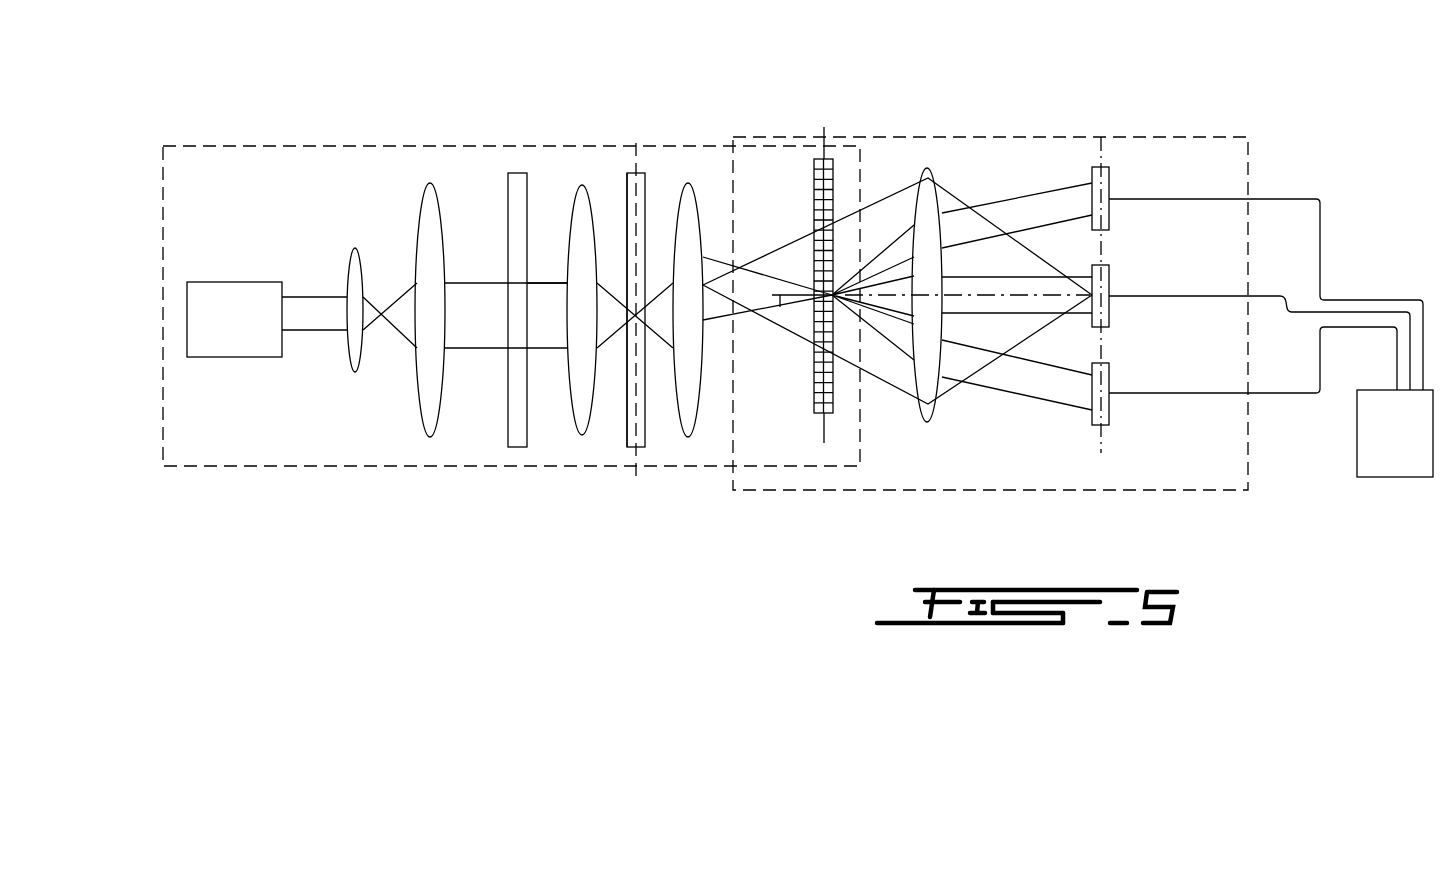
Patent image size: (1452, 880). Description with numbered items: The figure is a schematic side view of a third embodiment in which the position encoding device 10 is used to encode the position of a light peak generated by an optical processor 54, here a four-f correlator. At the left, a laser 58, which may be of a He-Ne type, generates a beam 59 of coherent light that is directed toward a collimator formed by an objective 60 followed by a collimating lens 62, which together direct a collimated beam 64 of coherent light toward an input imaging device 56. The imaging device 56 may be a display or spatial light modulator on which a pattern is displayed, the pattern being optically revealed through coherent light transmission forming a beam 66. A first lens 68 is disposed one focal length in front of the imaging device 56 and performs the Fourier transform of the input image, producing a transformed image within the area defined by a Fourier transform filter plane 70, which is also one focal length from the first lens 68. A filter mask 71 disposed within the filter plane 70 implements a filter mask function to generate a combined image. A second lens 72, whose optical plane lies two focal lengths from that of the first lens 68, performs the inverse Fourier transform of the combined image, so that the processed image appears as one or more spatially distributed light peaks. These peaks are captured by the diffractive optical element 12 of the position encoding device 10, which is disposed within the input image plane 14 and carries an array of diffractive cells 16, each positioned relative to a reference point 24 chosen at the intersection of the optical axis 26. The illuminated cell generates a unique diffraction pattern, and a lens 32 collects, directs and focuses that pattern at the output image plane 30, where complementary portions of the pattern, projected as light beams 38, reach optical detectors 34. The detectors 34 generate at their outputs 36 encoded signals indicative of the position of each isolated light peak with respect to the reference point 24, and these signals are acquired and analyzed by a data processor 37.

The position encoding device 10 is at (1057, 137).
The diffractive optical element 12 is at (815, 208).
The input image plane 14 is at (823, 140).
The diffractive cells 16 is at (833, 192).
The reference point 24 is at (818, 322).
The optical axis 26 is at (780, 310).
The output image plane 30 is at (1102, 148).
The lens 32 is at (935, 180).
The optical detectors 34 is at (1110, 220).
The outputs 36 is at (1110, 295).
The data processor 37 is at (1376, 452).
The light beams 38 is at (1042, 207).
The optical processor 54 is at (353, 145).
The imaging device 56 is at (517, 173).
The laser 58 is at (215, 282).
The beam 59 is at (314, 296).
The objective 60 is at (360, 252).
The collimating lens 62 is at (442, 215).
The collimated beam 64 is at (470, 352).
The beam 66 is at (543, 278).
The first lens 68 is at (602, 188).
The Fourier transform filter plane 70 is at (640, 160).
The filter mask 71 is at (621, 423).
The second lens 72 is at (698, 412).